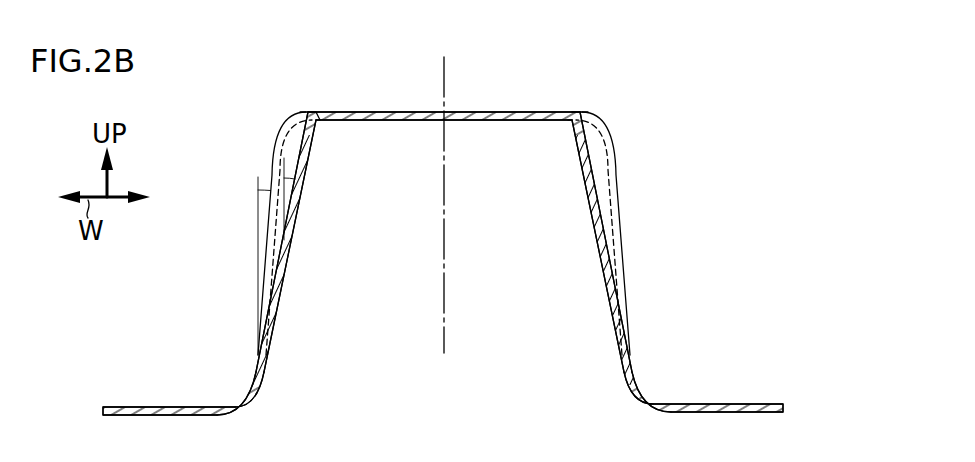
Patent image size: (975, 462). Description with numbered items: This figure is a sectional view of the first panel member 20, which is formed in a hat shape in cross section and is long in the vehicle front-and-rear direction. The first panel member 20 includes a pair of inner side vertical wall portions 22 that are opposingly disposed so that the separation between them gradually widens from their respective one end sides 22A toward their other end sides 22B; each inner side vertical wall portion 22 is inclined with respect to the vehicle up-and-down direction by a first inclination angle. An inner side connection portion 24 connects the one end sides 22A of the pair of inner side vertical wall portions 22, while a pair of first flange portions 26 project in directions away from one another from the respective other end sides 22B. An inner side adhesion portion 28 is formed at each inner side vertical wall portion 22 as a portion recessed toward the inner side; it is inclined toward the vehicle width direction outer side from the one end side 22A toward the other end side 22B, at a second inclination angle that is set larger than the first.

The first panel member 20 is at (708, 131).
The inner side vertical wall portion 22 is at (257, 310).
The one end side 22A is at (302, 112).
The other end side 22B is at (237, 396).
The inner side connection portion 24 is at (481, 111).
The first flange portion 26 is at (135, 406).
The inner side adhesion portion 28 is at (291, 249).